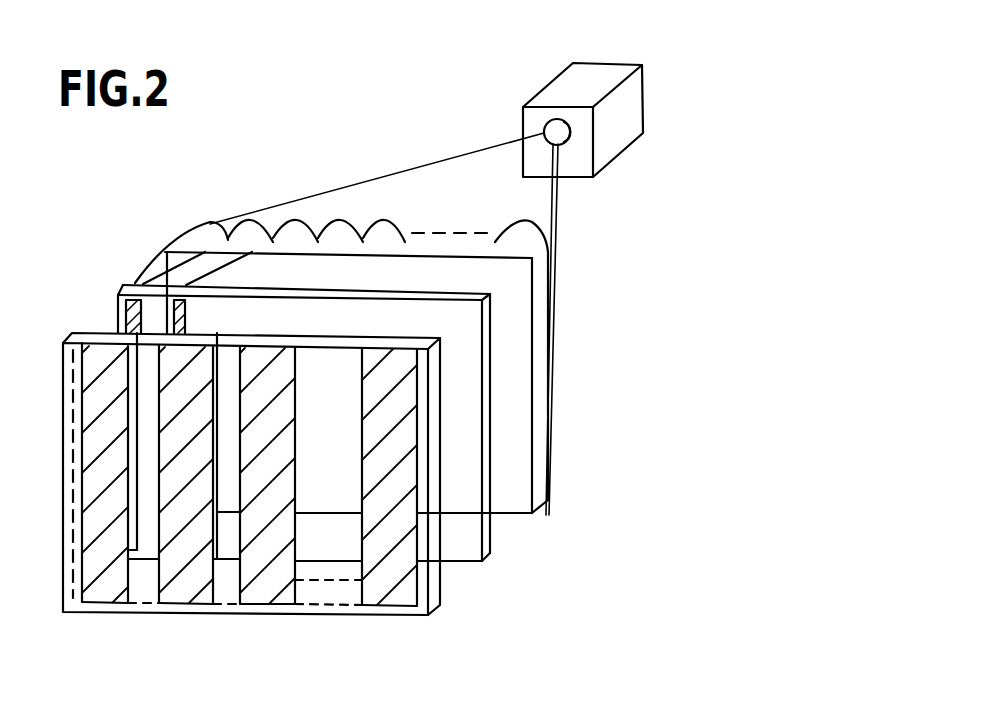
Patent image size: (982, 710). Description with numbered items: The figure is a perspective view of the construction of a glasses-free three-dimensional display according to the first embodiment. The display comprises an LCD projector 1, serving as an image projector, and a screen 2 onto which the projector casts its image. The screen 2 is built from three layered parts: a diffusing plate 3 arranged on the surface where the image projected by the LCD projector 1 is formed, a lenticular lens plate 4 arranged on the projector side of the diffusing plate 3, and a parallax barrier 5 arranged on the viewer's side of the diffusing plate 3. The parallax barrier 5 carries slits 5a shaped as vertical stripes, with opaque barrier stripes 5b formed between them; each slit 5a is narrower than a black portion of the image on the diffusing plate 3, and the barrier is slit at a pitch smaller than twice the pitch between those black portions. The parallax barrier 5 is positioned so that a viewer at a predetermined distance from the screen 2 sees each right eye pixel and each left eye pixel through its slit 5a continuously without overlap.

The LCD projector 1 is at (623, 132).
The screen 2 is at (435, 625).
The diffusing plate 3 is at (118, 285).
The lenticular lens plate 4 is at (197, 235).
The parallax barrier 5 is at (59, 340).
The slits 5a is at (148, 587).
The barrier stripes 5b is at (108, 587).